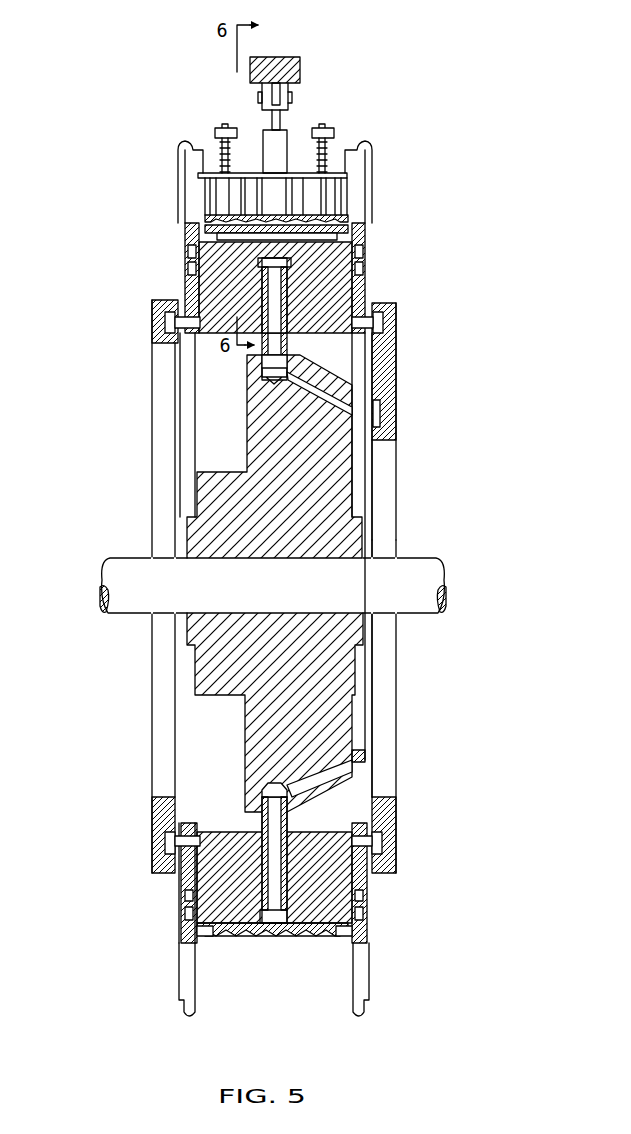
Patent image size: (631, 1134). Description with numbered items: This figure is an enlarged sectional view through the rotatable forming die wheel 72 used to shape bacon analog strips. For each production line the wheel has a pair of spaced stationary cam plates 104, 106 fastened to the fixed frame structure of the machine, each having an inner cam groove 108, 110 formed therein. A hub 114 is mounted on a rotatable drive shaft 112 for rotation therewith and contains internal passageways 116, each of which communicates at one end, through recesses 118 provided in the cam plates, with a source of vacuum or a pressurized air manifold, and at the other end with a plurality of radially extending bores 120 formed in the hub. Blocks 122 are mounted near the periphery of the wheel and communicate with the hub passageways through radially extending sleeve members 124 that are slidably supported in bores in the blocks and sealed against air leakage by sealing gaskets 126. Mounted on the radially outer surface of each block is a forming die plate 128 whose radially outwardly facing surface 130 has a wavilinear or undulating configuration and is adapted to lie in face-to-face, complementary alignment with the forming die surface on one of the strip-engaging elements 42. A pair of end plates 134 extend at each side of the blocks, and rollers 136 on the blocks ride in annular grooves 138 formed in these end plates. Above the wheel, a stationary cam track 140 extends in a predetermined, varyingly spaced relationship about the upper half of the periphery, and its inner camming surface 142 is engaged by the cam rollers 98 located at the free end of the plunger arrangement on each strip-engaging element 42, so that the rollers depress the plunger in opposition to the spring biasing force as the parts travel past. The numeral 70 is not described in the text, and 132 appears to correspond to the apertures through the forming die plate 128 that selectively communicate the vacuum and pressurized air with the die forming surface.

The strip-engaging element 42 is at (293, 170).
The upper holder assembly 70 is at (373, 276).
The rotatable forming die wheel 72 is at (397, 538).
The cam rollers 98 is at (297, 90).
The stationary cam plate 104 is at (152, 418).
The stationary cam plate 106 is at (397, 490).
The inner cam groove 108 is at (163, 322).
The inner cam groove 110 is at (383, 322).
The rotatable drive shaft 112 is at (115, 558).
The hub 114 is at (195, 493).
The internal passageways 116 is at (345, 382).
The recesses 118 is at (373, 430).
The radially extending bores 120 is at (262, 790).
The blocks 122 is at (184, 286).
The sleeve members 124 is at (225, 857).
The sealing gaskets 126 is at (312, 934).
The forming die plate 128 is at (185, 935).
The radially outwardly facing surface 130 is at (237, 938).
The end tab 132 is at (248, 934).
The end plates 134 is at (178, 172).
The rollers 136 is at (370, 265).
The annular grooves 138 is at (188, 268).
The stationary cam track 140 is at (288, 57).
The inner camming surface 142 is at (258, 88).